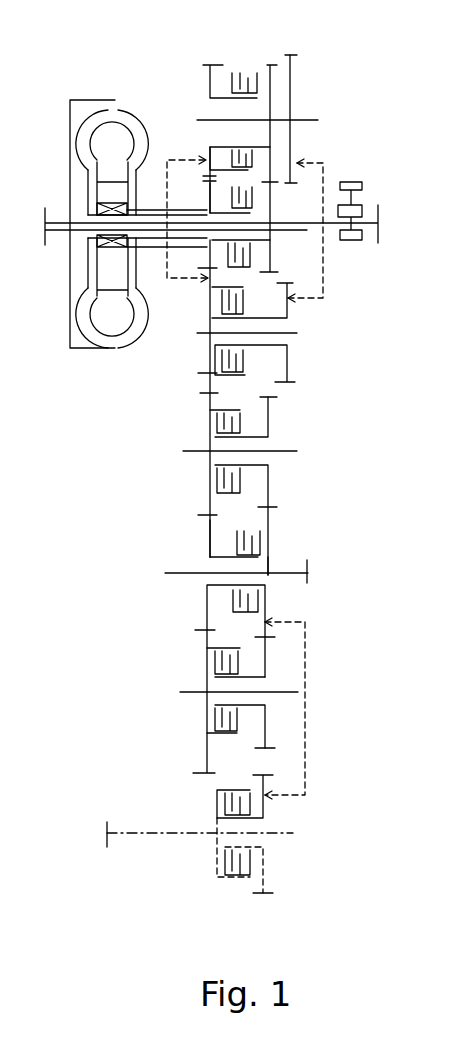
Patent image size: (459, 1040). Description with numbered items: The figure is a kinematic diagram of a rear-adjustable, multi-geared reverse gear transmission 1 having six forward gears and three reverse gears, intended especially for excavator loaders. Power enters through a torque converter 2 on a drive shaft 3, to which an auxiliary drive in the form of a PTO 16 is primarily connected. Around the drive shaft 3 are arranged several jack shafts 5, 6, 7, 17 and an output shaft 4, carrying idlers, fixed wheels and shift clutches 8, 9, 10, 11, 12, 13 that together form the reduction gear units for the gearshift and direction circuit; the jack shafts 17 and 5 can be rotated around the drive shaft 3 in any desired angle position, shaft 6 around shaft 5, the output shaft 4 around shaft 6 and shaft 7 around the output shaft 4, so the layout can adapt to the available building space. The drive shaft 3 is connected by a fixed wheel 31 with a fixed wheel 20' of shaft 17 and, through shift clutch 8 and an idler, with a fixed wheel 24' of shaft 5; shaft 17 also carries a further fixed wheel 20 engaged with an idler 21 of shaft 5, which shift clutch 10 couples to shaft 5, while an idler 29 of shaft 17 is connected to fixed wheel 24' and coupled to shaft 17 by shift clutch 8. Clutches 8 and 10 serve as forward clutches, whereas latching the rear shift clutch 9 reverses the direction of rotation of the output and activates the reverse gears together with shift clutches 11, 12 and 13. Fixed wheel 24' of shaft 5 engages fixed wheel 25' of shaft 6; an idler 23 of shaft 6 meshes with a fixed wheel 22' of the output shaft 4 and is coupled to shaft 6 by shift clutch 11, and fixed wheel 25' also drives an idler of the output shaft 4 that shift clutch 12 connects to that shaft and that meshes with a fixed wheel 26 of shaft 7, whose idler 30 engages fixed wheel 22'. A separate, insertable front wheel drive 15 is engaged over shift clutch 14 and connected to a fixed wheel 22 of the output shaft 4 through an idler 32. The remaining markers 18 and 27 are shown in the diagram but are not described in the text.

The reverse gear transmission 1 is at (138, 79).
The torque converter 2 is at (70, 148).
The drive shaft 3 is at (305, 229).
The output shaft 4 is at (287, 574).
The jack shaft 5 is at (297, 337).
The jack shaft 6 is at (251, 450).
The jack shaft 7 is at (298, 693).
The shift clutch 8 is at (243, 65).
The shift clutch 9 is at (240, 186).
The shift clutch 10 is at (215, 358).
The shift clutch 11 is at (203, 433).
The shift clutch 12 is at (258, 543).
The shift clutch 13 is at (208, 666).
The shift clutch 14 is at (217, 800).
The front wheel drive 15 is at (165, 843).
The PTO 16 is at (370, 200).
The jack shaft 17 is at (329, 178).
The linkage 18 is at (205, 254).
The fixed wheel 20 is at (307, 119).
The fixed wheel 20' is at (307, 158).
The idler 21 is at (297, 313).
The fixed wheel 22 is at (314, 559).
The fixed wheel 22' is at (292, 499).
The idler 23 is at (270, 422).
The fixed wheel 24' is at (215, 282).
The fixed wheel 25' is at (209, 520).
The fixed wheel 26 is at (205, 707).
The shaft 27 is at (207, 540).
The idler 29 is at (213, 148).
The idler 30 is at (278, 739).
The fixed wheel 31 is at (260, 213).
The idler 32 is at (263, 812).